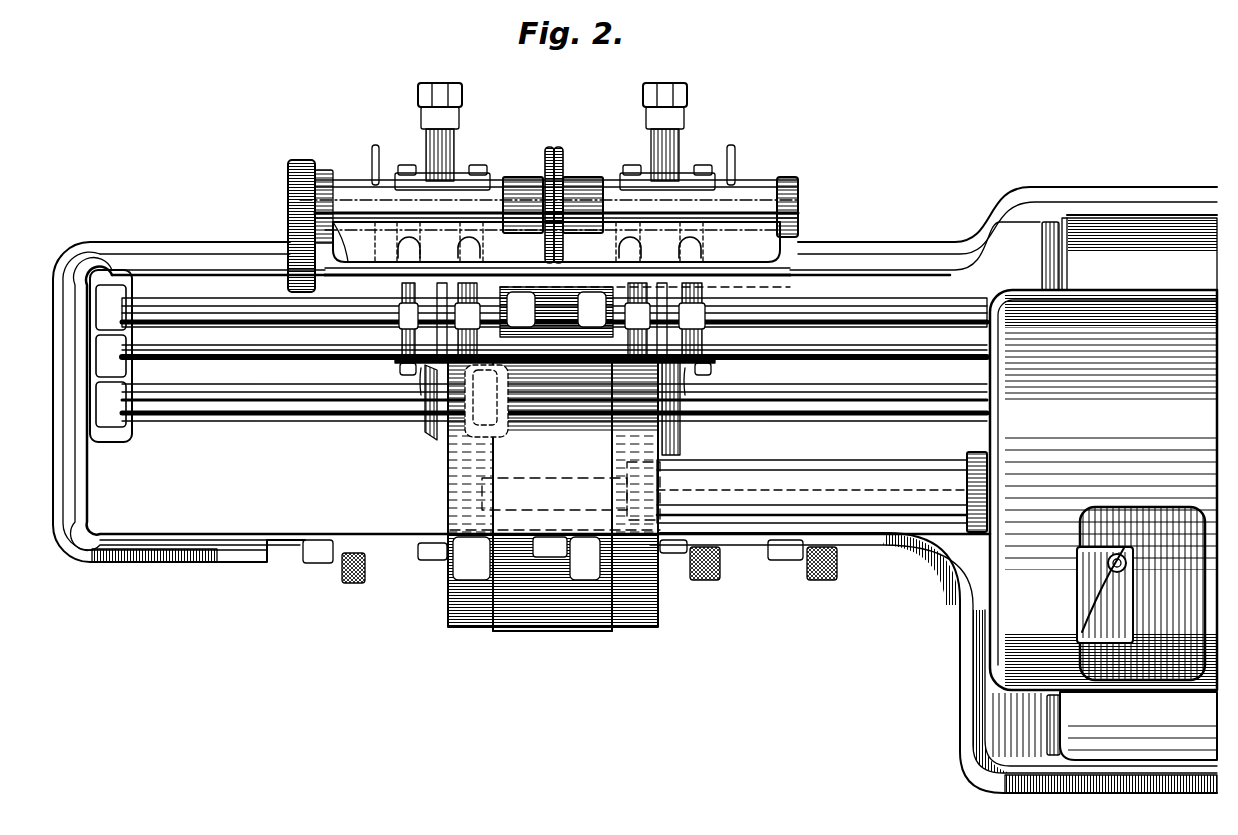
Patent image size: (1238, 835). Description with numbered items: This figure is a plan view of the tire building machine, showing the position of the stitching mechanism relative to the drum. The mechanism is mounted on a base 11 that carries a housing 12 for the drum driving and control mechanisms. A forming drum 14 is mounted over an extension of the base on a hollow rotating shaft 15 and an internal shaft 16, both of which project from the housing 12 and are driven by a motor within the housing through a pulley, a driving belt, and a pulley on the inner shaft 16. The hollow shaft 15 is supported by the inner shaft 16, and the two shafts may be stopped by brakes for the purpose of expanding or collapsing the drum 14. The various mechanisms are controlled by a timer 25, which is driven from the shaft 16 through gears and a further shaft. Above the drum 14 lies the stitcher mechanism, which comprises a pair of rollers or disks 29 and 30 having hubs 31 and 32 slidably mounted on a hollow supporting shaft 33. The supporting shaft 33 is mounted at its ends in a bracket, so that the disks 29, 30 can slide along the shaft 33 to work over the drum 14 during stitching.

The base 11 is at (165, 560).
The housing 12 is at (990, 652).
The forming drum 14 is at (548, 630).
The hollow rotating shaft 15 is at (553, 477).
The internal shaft 16 is at (786, 455).
The timer 25 is at (1137, 508).
The roller or disk 29 is at (548, 150).
The roller or disk 30 is at (562, 152).
The hub 31 is at (524, 178).
The hub 32 is at (580, 178).
The hollow supporting shaft 33 is at (763, 195).